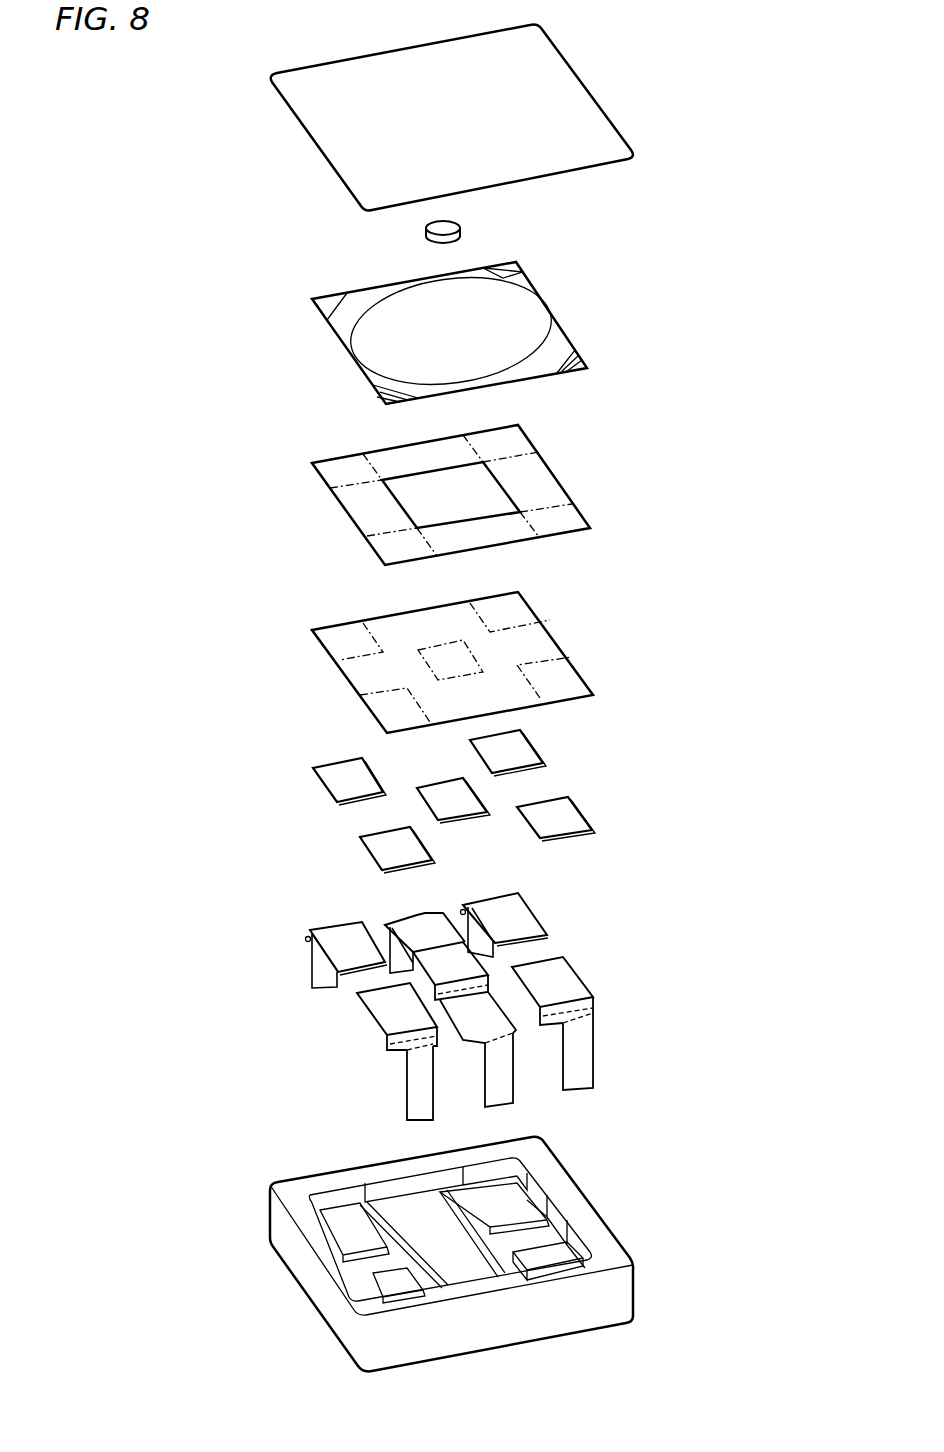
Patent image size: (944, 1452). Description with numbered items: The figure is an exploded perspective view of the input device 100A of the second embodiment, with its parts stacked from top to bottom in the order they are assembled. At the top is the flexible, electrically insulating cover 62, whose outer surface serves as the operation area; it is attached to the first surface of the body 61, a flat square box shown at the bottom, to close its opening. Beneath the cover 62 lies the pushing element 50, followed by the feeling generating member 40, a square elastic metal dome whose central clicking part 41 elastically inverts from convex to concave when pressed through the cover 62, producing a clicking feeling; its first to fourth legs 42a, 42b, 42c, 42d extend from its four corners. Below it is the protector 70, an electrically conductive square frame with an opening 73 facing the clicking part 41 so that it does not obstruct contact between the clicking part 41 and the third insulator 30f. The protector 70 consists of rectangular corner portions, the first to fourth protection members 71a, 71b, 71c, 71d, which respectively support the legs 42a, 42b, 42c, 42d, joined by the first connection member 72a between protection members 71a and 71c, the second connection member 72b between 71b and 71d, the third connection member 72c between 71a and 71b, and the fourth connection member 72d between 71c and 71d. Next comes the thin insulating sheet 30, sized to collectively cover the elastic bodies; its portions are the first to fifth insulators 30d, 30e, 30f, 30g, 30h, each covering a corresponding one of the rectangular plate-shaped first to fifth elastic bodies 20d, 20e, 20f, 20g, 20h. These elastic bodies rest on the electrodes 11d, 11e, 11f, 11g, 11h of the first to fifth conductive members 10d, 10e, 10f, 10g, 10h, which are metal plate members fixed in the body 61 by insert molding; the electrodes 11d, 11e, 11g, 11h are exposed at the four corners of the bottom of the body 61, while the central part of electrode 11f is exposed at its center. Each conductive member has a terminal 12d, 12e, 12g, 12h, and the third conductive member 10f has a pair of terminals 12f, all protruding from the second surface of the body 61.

The input device 100A is at (148, 115).
The cover 62 is at (573, 98).
The pushing element 50 is at (460, 227).
The feeling generating member 40 is at (441, 341).
The clicking part 41 is at (530, 330).
The first leg 42a is at (383, 405).
The second leg 42b is at (580, 372).
The third leg 42c is at (316, 305).
The fourth leg 42d is at (522, 272).
The protector 70 is at (450, 493).
The first protection member 71a is at (383, 548).
The second protection member 71b is at (567, 510).
The third protection member 71c is at (330, 479).
The fourth protection member 71d is at (522, 440).
The first connection member 72a is at (365, 518).
The second connection member 72b is at (535, 475).
The third connection member 72c is at (498, 532).
The fourth connection member 72d is at (433, 458).
The opening 73 is at (460, 500).
The insulating sheet 30 is at (452, 655).
The first insulator 30d is at (388, 710).
The second insulator 30e is at (563, 677).
The third insulator 30f is at (442, 658).
The fourth insulator 30g is at (337, 642).
The fifth insulator 30h is at (523, 612).
The first elastic body 20d is at (378, 847).
The second elastic body 20e is at (567, 810).
The third elastic body 20f is at (442, 792).
The fourth elastic body 20g is at (343, 788).
The fifth elastic body 20h is at (525, 757).
The first conductive member 10d is at (369, 1059).
The second conductive member 10e is at (582, 1015).
The third conductive member 10f is at (452, 995).
The fourth conductive member 10g is at (318, 936).
The fifth conductive member 10h is at (532, 908).
The electrode 11d is at (390, 1018).
The electrode 11e is at (565, 975).
The electrode 11f is at (450, 937).
The electrode 11g is at (328, 935).
The electrode 11h is at (517, 920).
The terminal 12d is at (417, 1085).
The terminal 12e is at (582, 1063).
The pair of terminals 12f is at (383, 938).
The terminal 12g is at (322, 965).
The terminal 12h is at (480, 940).
The body 61 is at (600, 1237).